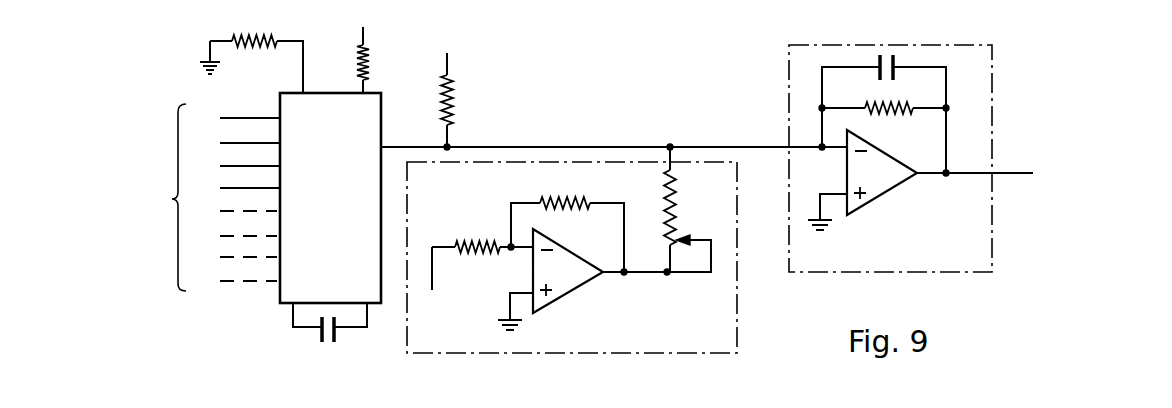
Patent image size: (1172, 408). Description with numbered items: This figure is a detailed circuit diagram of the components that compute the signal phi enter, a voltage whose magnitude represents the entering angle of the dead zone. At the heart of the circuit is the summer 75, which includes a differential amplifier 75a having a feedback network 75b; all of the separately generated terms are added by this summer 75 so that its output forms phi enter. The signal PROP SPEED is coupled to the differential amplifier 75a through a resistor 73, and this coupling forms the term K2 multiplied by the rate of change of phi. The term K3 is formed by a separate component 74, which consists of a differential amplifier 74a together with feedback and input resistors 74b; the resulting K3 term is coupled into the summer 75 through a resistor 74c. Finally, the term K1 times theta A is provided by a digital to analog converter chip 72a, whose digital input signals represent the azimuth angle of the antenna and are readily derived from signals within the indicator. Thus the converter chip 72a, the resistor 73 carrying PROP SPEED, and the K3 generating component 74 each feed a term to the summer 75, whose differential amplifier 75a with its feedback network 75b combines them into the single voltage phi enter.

The digital to analog converter chip 72a is at (277, 287).
The resistor 73 is at (450, 97).
The K3 generating component 74 is at (738, 282).
The differential amplifier 74a is at (575, 287).
The feedback and input resistors 74b is at (500, 243).
The resistor 74c is at (664, 185).
The summer 75 is at (788, 100).
The differential amplifier 75a is at (893, 186).
The feedback network 75b is at (874, 103).